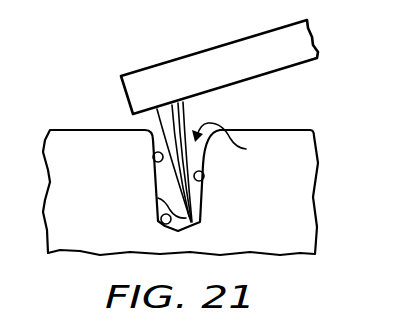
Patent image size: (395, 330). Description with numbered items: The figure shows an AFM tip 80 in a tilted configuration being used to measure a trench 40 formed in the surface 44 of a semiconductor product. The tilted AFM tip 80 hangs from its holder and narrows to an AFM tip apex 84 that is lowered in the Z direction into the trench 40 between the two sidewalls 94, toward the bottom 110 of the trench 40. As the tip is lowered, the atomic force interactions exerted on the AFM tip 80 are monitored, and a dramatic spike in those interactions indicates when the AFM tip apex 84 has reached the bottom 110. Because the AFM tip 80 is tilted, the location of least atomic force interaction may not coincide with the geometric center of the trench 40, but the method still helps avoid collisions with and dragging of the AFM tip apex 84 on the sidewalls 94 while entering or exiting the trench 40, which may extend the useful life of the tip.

The surface 44 is at (88, 130).
The AFM tip 80 is at (187, 113).
The trench 40 is at (231, 142).
The sidewalls 94 is at (153, 157).
The AFM tip apex 84 is at (158, 198).
The bottom 110 is at (161, 219).